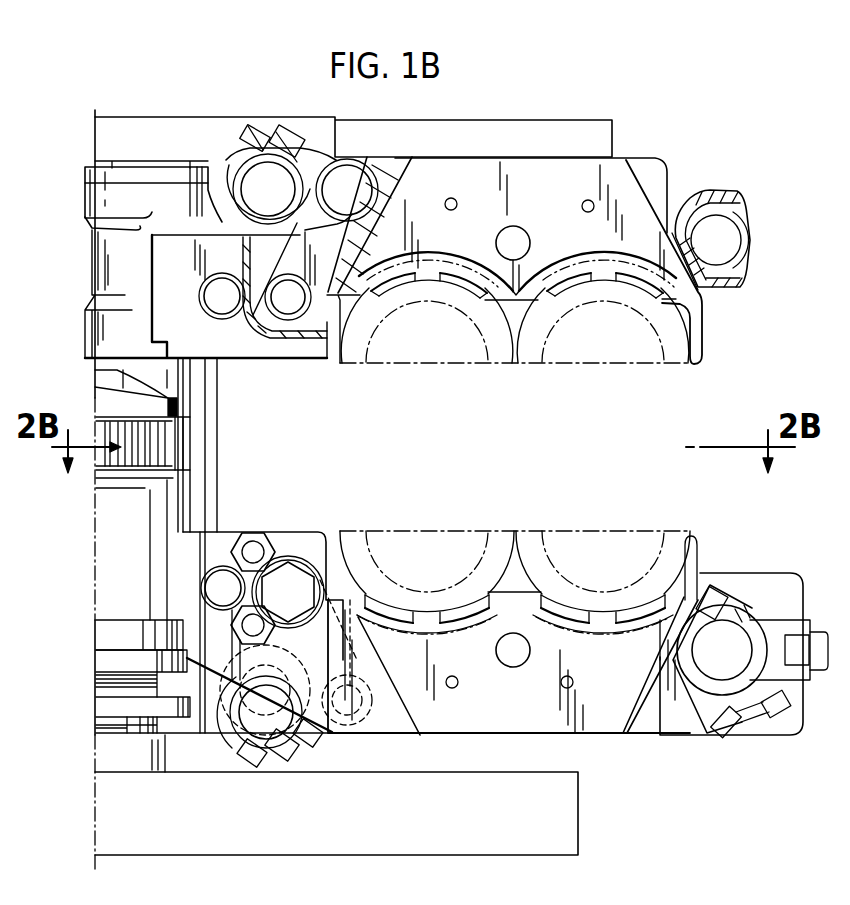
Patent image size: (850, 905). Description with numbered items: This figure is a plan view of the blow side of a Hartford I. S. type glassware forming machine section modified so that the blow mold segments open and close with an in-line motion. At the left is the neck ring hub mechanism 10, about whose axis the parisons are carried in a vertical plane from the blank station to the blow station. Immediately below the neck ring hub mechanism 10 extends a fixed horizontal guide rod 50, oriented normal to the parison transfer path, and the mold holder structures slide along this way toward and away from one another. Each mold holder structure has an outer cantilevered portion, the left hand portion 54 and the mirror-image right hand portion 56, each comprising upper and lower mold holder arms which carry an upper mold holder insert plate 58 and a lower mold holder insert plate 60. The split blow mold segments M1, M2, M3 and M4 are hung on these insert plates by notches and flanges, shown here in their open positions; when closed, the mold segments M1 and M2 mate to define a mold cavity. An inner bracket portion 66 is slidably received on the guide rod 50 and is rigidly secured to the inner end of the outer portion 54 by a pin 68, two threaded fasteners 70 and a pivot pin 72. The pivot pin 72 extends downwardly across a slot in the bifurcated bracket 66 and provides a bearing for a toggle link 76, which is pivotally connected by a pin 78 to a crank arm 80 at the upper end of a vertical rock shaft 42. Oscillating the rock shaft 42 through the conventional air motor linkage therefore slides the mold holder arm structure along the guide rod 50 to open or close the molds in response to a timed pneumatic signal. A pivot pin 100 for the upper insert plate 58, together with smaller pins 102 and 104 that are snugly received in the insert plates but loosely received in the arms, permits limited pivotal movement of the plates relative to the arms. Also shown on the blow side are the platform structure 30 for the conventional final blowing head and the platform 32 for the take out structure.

The neck ring hub mechanism 10 is at (113, 537).
The final blowing head platform structure 30 is at (749, 590).
The take out platform 32 is at (710, 183).
The vertical rock shaft 42 is at (252, 172).
The guide rod 50 is at (118, 386).
The outer cantilevered portion of left hand mold holder structure 54 is at (658, 160).
The outer cantilevered portion of right hand mold holder structure 56 is at (650, 733).
The upper mold holder insert plate 58 is at (532, 194).
The lower mold holder insert plate 60 is at (518, 717).
The inner bracket portion 66 is at (85, 197).
The pin 68 is at (219, 570).
The threaded fastener 70 is at (255, 535).
The pivot pin 72 is at (288, 316).
The toggle link 76 is at (323, 335).
The pin 78 is at (345, 188).
The crank arm 80 is at (322, 165).
The pivot pin for upper insert plate 100 is at (516, 226).
The angular travel limiting pin 102 is at (587, 212).
The angular travel limiting pin 104 is at (450, 210).
The blow mold segment M1 is at (362, 368).
The blow mold segment M2 is at (361, 526).
The blow mold segment M3 is at (531, 369).
The blow mold segment M4 is at (530, 526).